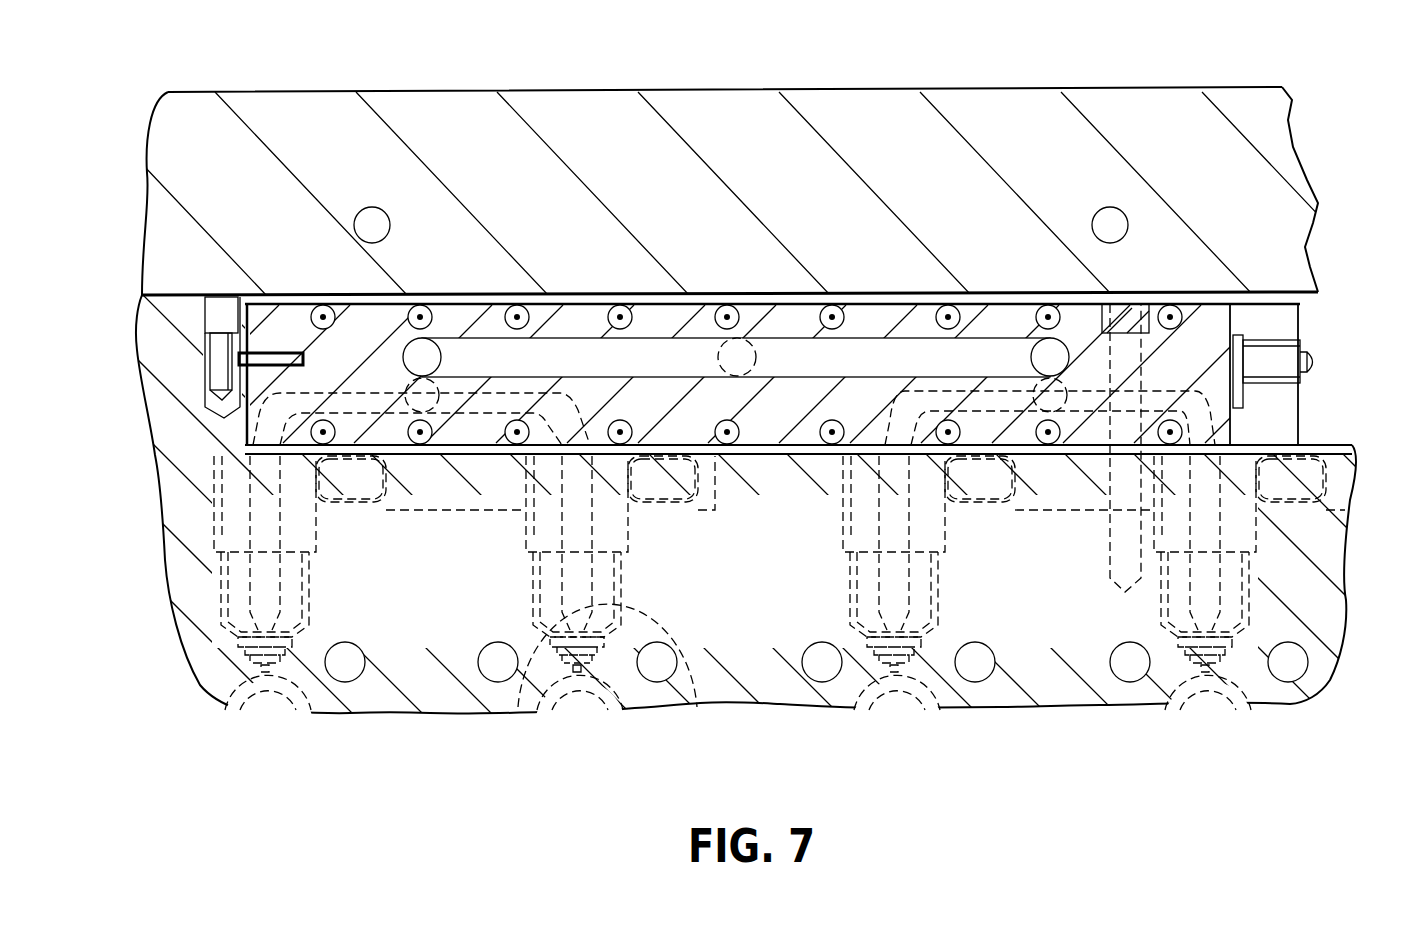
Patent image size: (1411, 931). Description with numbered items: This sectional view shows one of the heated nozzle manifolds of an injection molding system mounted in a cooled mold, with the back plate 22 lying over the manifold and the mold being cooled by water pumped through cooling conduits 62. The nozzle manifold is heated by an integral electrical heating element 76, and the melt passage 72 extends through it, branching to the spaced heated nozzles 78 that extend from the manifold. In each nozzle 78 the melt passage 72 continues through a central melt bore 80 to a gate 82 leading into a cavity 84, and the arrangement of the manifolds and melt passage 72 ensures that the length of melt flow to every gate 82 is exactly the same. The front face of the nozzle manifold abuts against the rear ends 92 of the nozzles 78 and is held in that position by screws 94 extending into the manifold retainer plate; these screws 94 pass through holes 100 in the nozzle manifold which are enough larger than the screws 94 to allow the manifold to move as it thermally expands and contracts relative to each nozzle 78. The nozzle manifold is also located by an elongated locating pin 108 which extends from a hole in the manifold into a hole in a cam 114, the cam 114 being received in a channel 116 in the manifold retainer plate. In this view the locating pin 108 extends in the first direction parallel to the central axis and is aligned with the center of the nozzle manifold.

The back plate 22 is at (566, 112).
The cooling conduits 62 is at (370, 222).
The melt passage 72 is at (688, 357).
The integral electrical heating element 76 is at (517, 312).
The heated nozzles 78 is at (697, 707).
The central melt bore 80 is at (575, 598).
The gate 82 is at (578, 674).
The cavity 84 is at (572, 660).
The rear ends of the nozzles 92 is at (874, 445).
The screws 94 is at (1120, 340).
The holes 100 is at (1130, 355).
The elongated locating pin 108 is at (292, 353).
The cam 114 is at (223, 352).
The channel 116 is at (222, 315).